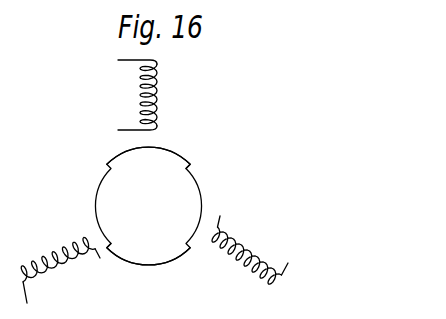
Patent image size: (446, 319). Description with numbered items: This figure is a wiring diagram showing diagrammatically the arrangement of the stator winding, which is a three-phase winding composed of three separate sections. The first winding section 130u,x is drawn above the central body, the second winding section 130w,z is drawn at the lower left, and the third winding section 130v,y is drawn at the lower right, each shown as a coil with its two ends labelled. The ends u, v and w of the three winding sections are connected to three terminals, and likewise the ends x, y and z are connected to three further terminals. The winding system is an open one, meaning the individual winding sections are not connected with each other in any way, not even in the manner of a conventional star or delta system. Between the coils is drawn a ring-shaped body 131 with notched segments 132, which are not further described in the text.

The winding section 130u,x is at (158, 89).
The winding section 130w,z is at (50, 260).
The winding section 130v,y is at (238, 268).
The rotor / stator ring body 131 is at (170, 202).
The notches / pole segments of ring 132 is at (166, 162).